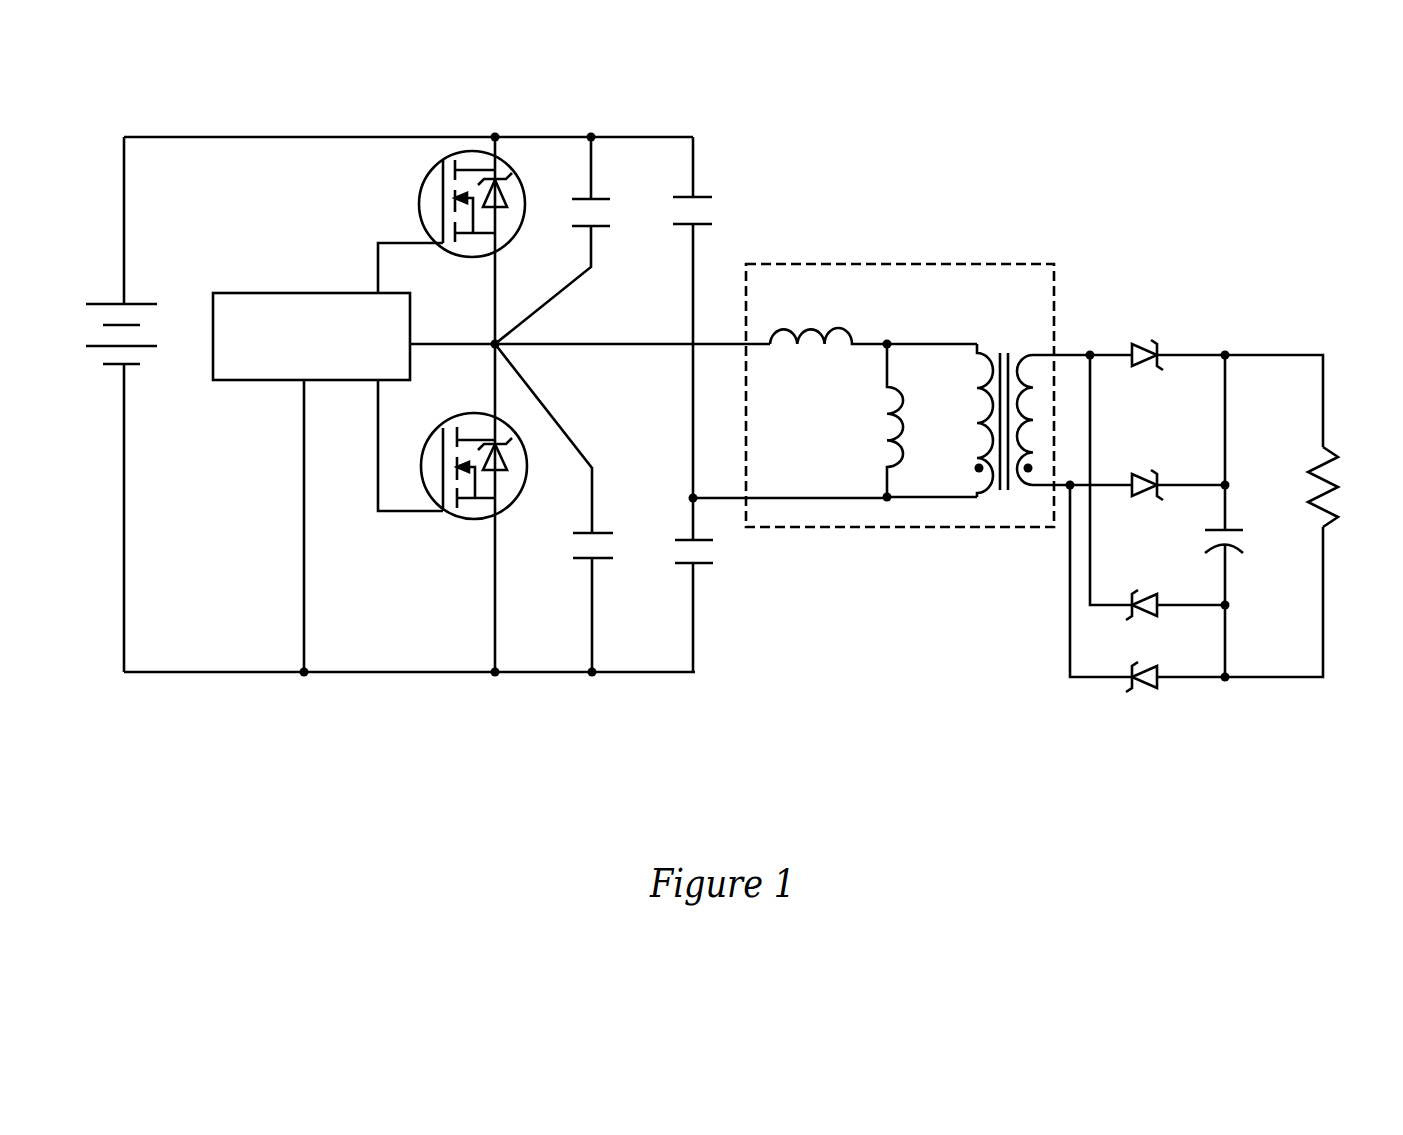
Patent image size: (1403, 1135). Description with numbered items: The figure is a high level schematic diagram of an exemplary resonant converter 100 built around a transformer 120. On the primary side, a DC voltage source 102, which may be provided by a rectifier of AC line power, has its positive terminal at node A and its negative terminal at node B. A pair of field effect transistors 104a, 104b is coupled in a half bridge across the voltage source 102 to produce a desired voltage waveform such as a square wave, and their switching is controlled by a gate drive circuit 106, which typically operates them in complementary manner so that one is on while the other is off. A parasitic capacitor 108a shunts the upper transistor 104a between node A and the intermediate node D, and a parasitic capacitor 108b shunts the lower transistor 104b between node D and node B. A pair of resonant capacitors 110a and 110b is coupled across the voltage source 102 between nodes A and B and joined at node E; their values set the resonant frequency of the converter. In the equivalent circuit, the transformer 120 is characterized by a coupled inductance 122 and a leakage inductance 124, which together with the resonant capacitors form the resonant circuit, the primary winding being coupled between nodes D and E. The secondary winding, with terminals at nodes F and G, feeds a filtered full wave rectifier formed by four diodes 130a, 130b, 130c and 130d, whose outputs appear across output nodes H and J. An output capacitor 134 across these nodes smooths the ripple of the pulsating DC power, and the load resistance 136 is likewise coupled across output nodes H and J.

The resonant converter 100 is at (987, 142).
The DC voltage source V_link 102 is at (136, 303).
The field effect transistor 104a is at (420, 207).
The field effect transistor 104b is at (468, 518).
The gate drive circuit 106 is at (370, 367).
The parasitic capacitor C_par 108a is at (602, 198).
The parasitic capacitor C_par 108b is at (604, 531).
The resonant capacitor C_res 110a is at (701, 196).
The resonant capacitor C_res 110b is at (704, 566).
The transformer 120 is at (1043, 297).
The coupled inductance L_cpld 122 is at (880, 434).
The leakage inductance L_lkg 124 is at (863, 321).
The diode 130a is at (1138, 369).
The diode 130b is at (1138, 499).
The diode 130c is at (1147, 618).
The diode 130d is at (1147, 690).
The output capacitor C_out 134 is at (1232, 553).
The load resistance R_load 136 is at (1332, 447).